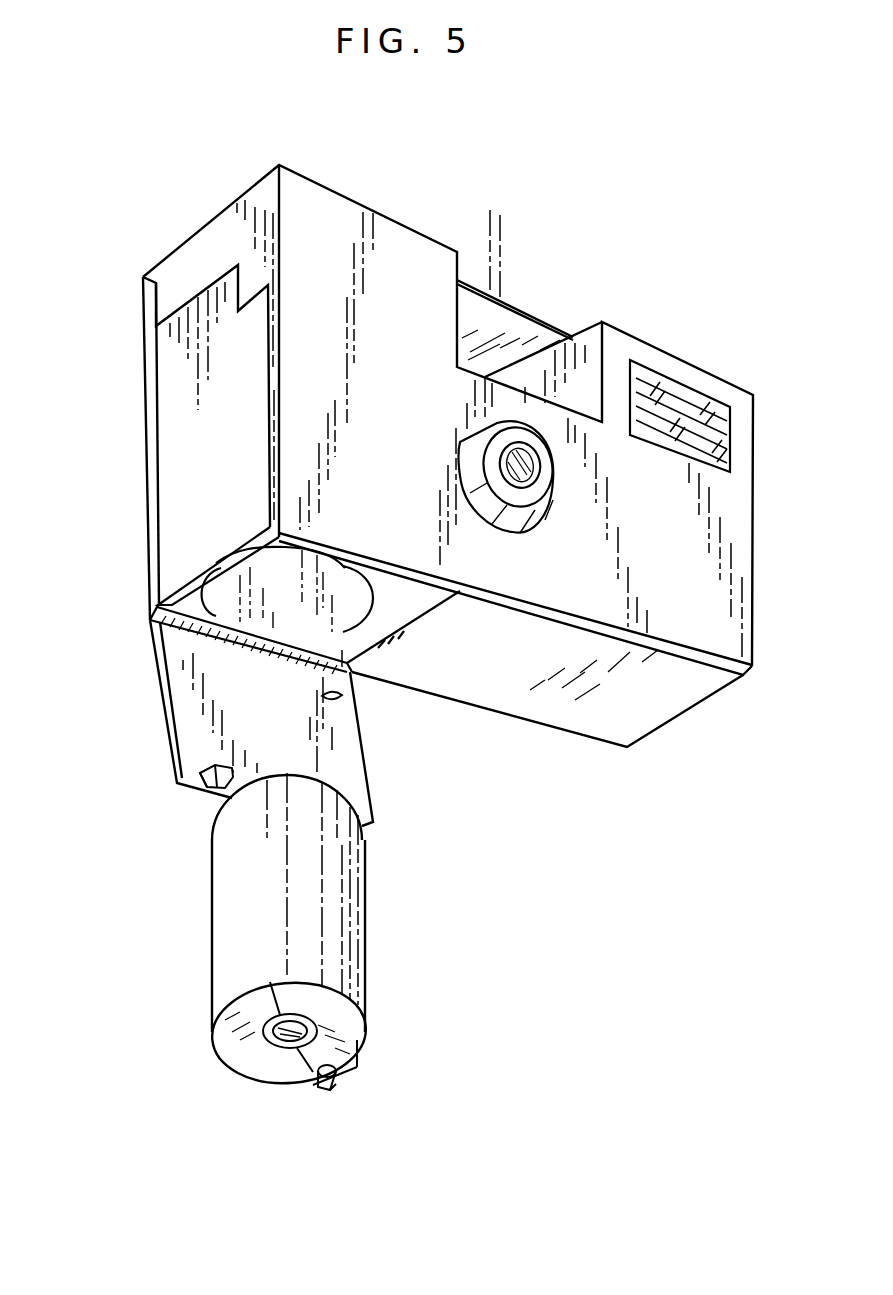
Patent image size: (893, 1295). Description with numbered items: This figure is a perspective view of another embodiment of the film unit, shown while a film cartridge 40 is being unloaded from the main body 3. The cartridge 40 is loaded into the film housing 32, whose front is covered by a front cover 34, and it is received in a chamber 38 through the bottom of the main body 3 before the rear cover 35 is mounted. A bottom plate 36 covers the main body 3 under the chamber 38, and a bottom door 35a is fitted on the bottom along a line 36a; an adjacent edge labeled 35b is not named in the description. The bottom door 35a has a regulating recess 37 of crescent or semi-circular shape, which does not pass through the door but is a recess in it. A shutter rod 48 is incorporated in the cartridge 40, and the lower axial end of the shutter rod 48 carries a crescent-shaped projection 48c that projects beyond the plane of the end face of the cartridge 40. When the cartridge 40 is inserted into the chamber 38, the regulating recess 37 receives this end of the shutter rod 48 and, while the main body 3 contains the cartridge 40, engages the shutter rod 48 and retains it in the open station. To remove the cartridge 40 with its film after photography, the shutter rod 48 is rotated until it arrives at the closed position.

The main body 3 is at (188, 498).
The film housing 32 is at (396, 178).
The front cover 34 is at (667, 363).
The rear cover 35 is at (150, 416).
The bottom door 35a is at (190, 792).
The cut edge of side plate 35b is at (163, 626).
The bottom plate 36 is at (652, 710).
The line 36a is at (398, 632).
The regulating recess 37 is at (340, 704).
The chamber 38 is at (283, 550).
The cartridge 40 is at (362, 917).
The shutter rod 48 is at (344, 1113).
The crescent-shaped projection 48c is at (318, 1091).